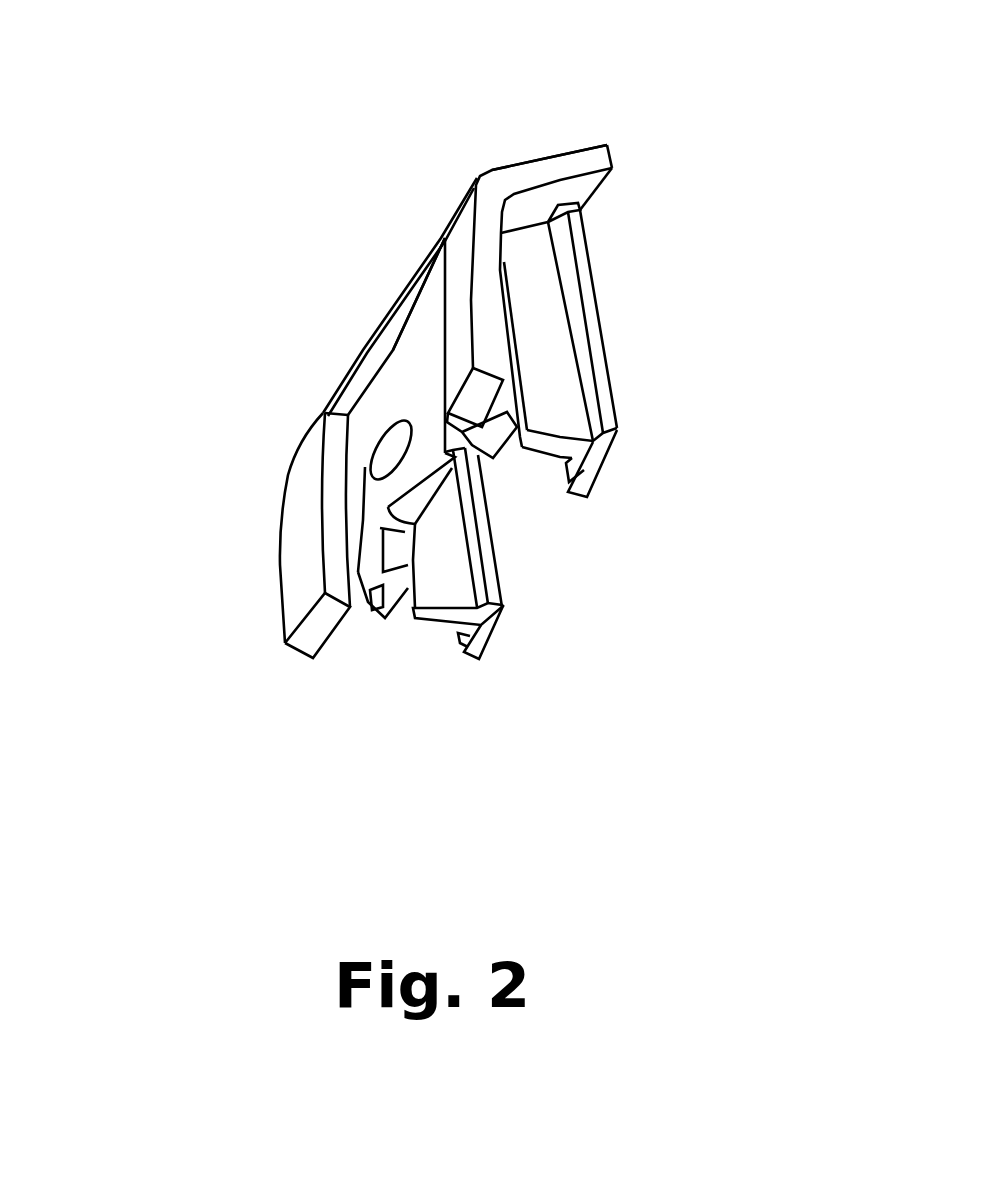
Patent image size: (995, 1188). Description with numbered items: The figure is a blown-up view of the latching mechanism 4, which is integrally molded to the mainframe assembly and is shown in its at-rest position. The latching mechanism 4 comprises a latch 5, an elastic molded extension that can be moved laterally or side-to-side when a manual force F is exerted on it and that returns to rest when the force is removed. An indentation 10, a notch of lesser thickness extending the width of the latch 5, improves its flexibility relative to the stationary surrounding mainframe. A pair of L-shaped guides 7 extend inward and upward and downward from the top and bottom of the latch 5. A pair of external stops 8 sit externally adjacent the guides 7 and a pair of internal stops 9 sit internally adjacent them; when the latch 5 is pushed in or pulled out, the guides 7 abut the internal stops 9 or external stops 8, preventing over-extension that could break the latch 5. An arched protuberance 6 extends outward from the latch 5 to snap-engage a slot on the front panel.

The latching mechanism 4 is at (607, 92).
The latch 5 is at (397, 387).
The arched protuberance 6 is at (385, 503).
The guides 7 is at (498, 410).
The external stops 8 is at (460, 302).
The internal stops 9 is at (593, 461).
The indentation 10 is at (407, 328).
The manual force F is at (388, 459).